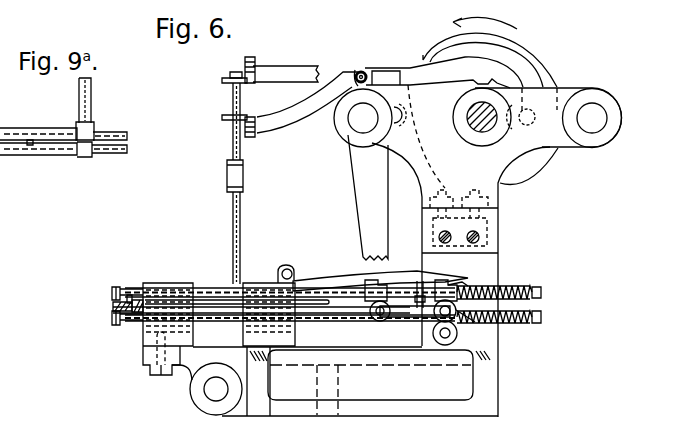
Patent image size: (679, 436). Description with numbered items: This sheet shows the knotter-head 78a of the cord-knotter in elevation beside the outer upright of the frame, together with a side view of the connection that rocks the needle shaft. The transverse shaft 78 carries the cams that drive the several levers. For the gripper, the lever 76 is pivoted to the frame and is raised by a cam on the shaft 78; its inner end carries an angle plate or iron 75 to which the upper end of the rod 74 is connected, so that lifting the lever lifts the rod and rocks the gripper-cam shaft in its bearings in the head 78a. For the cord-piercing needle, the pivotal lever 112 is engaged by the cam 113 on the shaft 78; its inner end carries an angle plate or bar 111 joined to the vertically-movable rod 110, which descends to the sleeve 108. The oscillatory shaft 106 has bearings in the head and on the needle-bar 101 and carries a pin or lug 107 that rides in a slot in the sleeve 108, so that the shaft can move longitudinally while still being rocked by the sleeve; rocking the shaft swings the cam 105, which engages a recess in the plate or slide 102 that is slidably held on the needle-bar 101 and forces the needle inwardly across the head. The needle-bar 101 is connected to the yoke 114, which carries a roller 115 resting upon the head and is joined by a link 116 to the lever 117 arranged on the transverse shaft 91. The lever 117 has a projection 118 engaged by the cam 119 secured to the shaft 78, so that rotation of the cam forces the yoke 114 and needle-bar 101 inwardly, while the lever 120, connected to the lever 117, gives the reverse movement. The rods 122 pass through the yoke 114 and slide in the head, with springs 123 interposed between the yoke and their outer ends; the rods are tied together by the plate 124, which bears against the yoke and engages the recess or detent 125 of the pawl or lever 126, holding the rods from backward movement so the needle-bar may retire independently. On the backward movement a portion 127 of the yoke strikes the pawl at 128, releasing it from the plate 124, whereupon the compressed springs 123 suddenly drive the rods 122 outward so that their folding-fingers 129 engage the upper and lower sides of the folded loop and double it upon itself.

In FIG. 6, the rod 74 is at (232, 99).
In FIG. 6, the angle plate or iron 75 is at (226, 79).
In FIG. 6, the lever 76 is at (287, 68).
In FIG. 6, the transverse shaft 78 is at (482, 117).
In FIG. 6, the head 78a is at (350, 251).
In FIG. 6, the transverse shaft 91 is at (357, 119).
In FIG. 6, the needle-bar 101 is at (113, 310).
In FIG. 6, the plate or slide 102 is at (113, 305).
In FIG. 6, the cam 105 is at (128, 295).
In FIG. 9A, the oscillatory shaft 106 is at (124, 147).
In FIG. 6, the oscillatory shaft 106 is at (137, 300).
In FIG. 9A, the pin or lug 107 is at (31, 146).
In FIG. 9A, the sleeve 108 is at (46, 128).
In FIG. 9A, the vertically-movable rod 110 is at (92, 121).
In FIG. 6, the vertically-movable rod 110 is at (239, 226).
In FIG. 6, the angle plate or bar 111 is at (253, 136).
In FIG. 6, the pivotal lever 112 is at (277, 118).
In FIG. 6, the cam 113 is at (562, 152).
In FIG. 6, the yoke 114 is at (480, 322).
In FIG. 6, the roller 115 is at (453, 344).
In FIG. 6, the link 116 is at (405, 320).
In FIG. 6, the lever 117 is at (362, 225).
In FIG. 6, the projection 118 is at (400, 128).
In FIG. 6, the cam 119 is at (522, 48).
In FIG. 6, the lever 120 is at (390, 71).
In FIG. 6, the rods 122 is at (210, 288).
In FIG. 6, the springs 123 is at (511, 287).
In FIG. 6, the plate 124 is at (417, 288).
In FIG. 6, the recess or detent 125 is at (372, 282).
In FIG. 6, the pawl or lever 126 is at (315, 272).
In FIG. 6, the portion of the yoke 127 is at (457, 284).
In FIG. 6, the engagement point of pawl 128 is at (443, 280).
In FIG. 6, the folding-fingers 129 is at (115, 288).